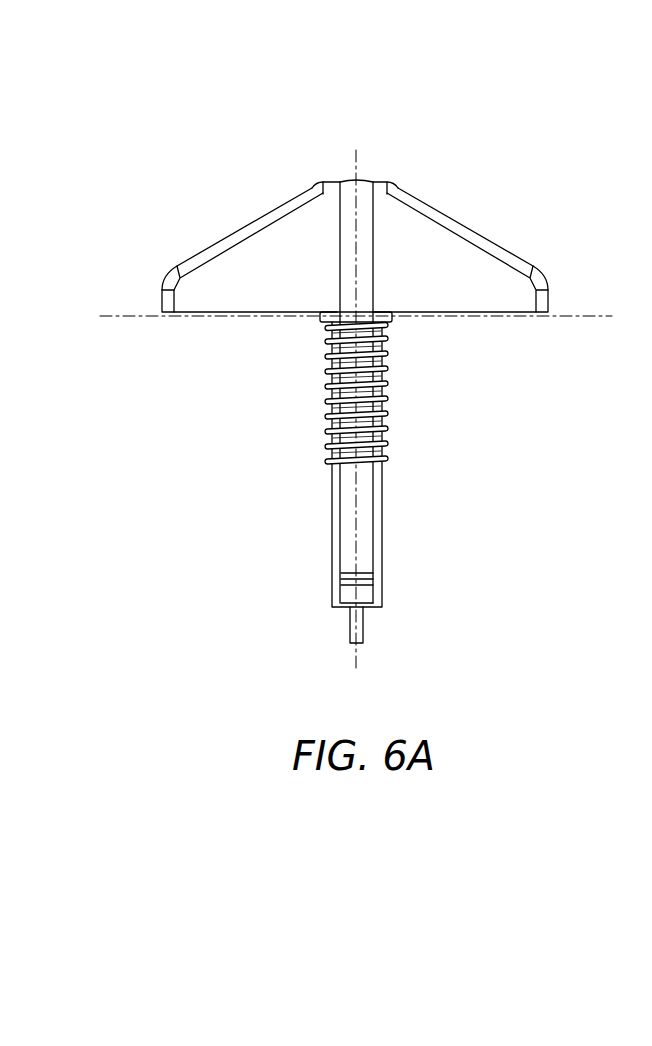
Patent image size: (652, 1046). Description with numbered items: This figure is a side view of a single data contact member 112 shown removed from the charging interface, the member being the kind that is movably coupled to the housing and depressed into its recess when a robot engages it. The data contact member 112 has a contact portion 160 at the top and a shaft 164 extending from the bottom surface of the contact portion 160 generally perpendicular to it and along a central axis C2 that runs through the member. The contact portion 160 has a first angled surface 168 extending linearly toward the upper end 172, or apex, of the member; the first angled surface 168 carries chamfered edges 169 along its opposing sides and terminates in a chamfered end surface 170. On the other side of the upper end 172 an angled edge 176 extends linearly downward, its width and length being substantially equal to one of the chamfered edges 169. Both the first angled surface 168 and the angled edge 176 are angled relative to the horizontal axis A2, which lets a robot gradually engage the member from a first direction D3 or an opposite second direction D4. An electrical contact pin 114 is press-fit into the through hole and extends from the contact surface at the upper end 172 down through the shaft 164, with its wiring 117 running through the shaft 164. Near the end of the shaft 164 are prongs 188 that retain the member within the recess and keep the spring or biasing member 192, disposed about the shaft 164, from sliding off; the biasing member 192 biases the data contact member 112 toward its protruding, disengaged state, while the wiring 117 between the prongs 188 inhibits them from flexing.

The data contact member 112 is at (376, 60).
The electrical contact pin 114 is at (356, 181).
The wiring 117 is at (352, 626).
The contact portion 160 is at (548, 224).
The shaft 164 is at (331, 530).
The first angled surface 168 is at (235, 233).
The chamfered edges 169 is at (290, 215).
The chamfered end surface 170 is at (160, 293).
The upper end 172 is at (376, 144).
The angled edge 176 is at (468, 230).
The prongs 188 is at (366, 578).
The spring or biasing member 192 is at (420, 405).
The horizontal axis A2 is at (133, 315).
The central axis C2 is at (358, 625).
The first direction D3 is at (270, 93).
The second direction D4 is at (533, 93).